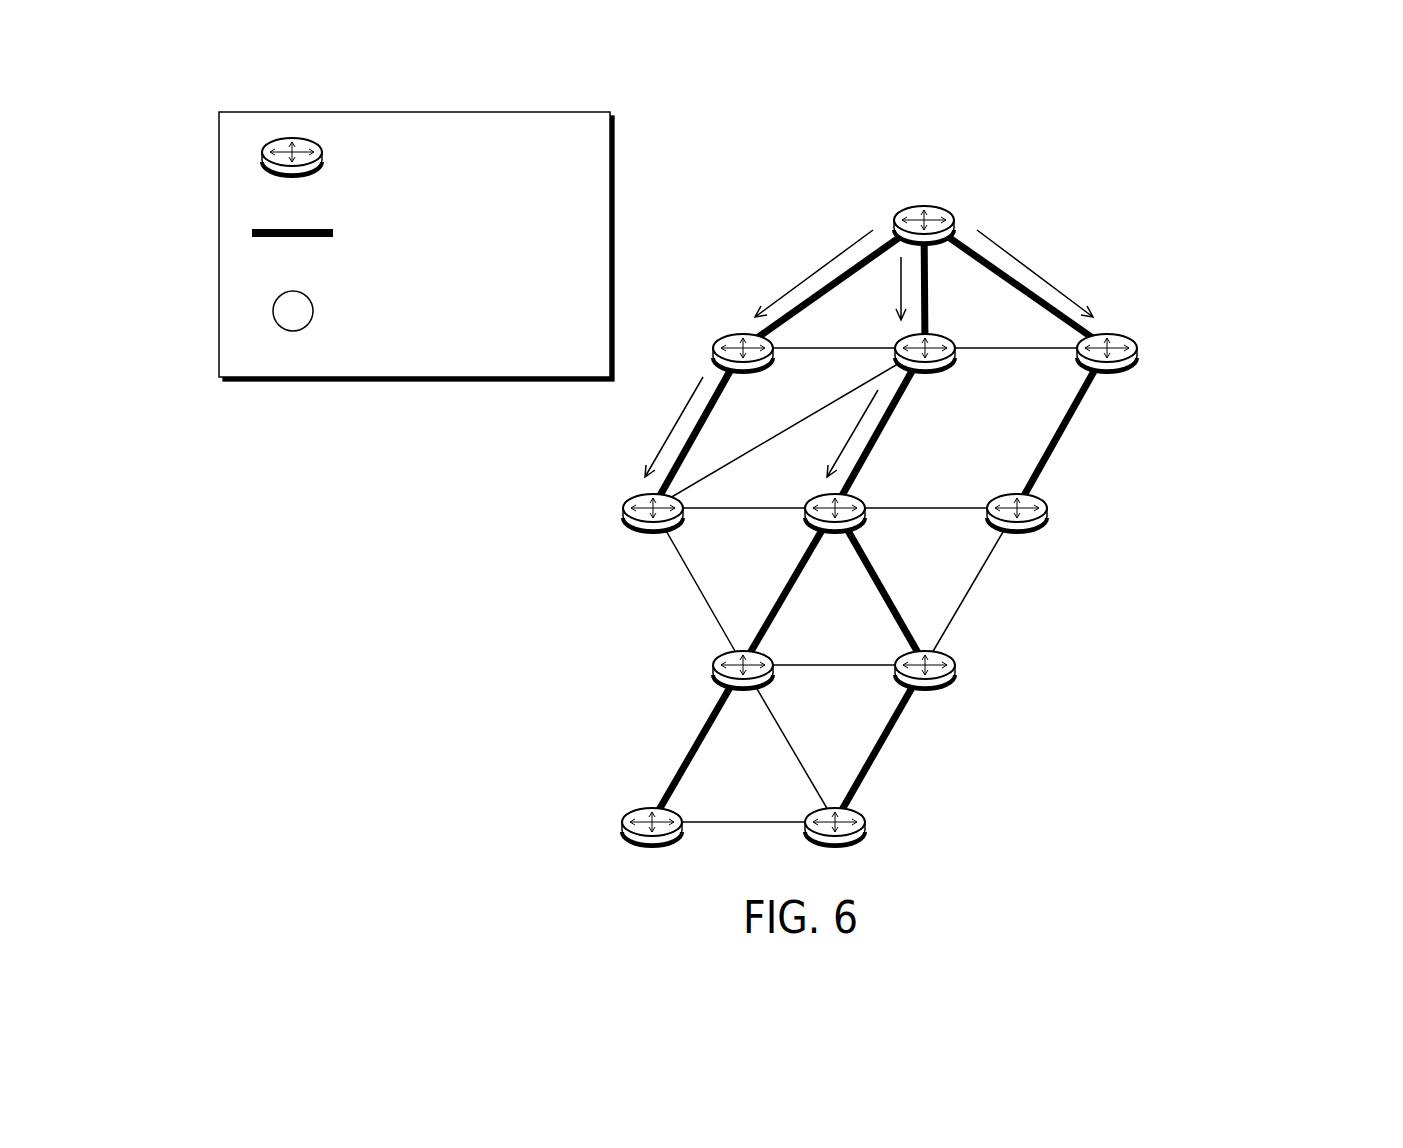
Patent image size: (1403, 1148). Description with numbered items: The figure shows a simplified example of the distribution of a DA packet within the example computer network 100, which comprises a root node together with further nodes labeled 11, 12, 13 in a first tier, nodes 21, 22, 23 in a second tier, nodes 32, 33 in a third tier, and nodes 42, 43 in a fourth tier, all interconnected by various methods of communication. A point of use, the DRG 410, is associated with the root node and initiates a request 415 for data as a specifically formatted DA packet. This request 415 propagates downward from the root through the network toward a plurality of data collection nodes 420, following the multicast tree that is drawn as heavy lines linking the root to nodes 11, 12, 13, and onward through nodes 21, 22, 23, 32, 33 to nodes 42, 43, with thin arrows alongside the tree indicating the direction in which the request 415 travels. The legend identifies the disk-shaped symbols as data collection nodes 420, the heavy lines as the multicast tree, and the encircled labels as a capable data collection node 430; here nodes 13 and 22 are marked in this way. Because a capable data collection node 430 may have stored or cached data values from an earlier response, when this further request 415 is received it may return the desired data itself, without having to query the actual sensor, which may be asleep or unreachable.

The computer network 100 is at (1283, 156).
The DRG 410 is at (968, 195).
The request 415 is at (646, 451).
The data collection nodes 420 is at (417, 165).
The capable data collection node 430 is at (423, 323).
The node 11 is at (743, 373).
The node 12 is at (925, 373).
The node 13 is at (1107, 377).
The node 21 is at (653, 531).
The node 22 is at (835, 535).
The node 23 is at (1017, 531).
The node 32 is at (743, 689).
The node 33 is at (925, 689).
The node 42 is at (652, 846).
The node 43 is at (835, 846).